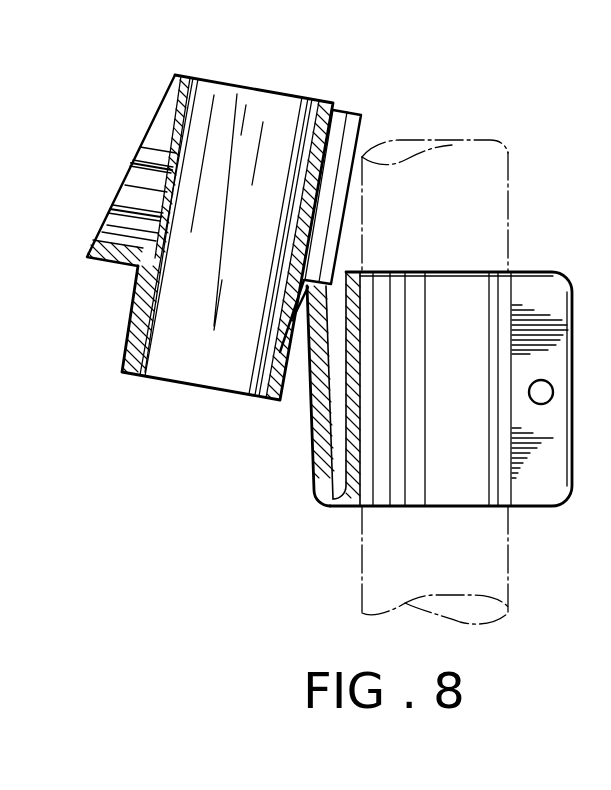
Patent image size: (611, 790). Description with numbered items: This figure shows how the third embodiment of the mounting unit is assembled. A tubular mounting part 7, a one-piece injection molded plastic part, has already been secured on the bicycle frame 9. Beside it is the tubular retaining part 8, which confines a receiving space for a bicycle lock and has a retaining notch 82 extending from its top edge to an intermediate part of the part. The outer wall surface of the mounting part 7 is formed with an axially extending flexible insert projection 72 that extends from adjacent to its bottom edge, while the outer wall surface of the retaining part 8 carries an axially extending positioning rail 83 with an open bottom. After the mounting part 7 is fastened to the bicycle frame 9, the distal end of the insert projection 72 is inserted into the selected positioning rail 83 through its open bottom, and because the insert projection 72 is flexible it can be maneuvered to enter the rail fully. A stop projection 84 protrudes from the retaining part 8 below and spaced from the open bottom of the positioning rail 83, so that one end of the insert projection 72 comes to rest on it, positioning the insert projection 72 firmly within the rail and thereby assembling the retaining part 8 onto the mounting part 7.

The mounting part 7 is at (331, 508).
The insert projection 72 is at (313, 465).
The retaining part 8 is at (128, 330).
The retaining notch 82 is at (116, 224).
The positioning rail 83 is at (337, 127).
The stop projection 84 is at (303, 331).
The bicycle frame 9 is at (508, 233).